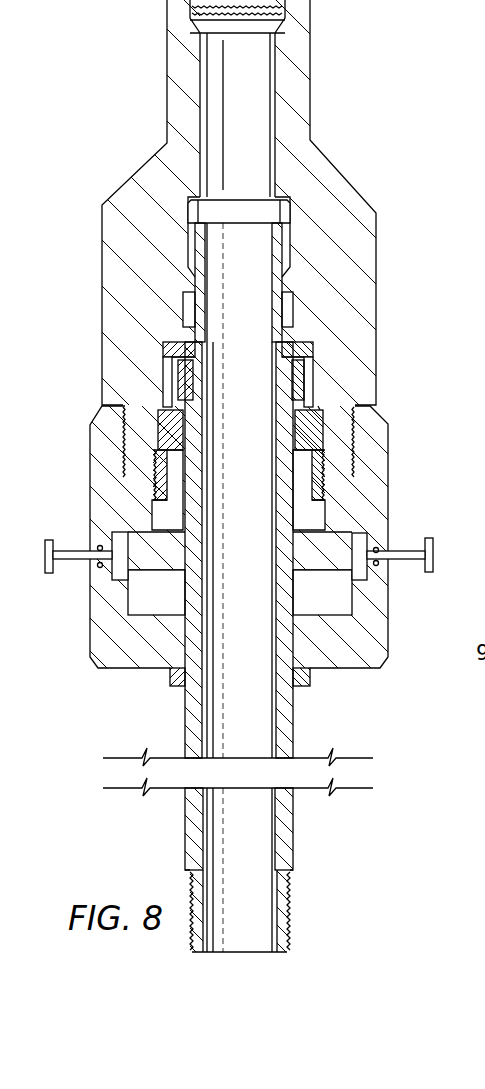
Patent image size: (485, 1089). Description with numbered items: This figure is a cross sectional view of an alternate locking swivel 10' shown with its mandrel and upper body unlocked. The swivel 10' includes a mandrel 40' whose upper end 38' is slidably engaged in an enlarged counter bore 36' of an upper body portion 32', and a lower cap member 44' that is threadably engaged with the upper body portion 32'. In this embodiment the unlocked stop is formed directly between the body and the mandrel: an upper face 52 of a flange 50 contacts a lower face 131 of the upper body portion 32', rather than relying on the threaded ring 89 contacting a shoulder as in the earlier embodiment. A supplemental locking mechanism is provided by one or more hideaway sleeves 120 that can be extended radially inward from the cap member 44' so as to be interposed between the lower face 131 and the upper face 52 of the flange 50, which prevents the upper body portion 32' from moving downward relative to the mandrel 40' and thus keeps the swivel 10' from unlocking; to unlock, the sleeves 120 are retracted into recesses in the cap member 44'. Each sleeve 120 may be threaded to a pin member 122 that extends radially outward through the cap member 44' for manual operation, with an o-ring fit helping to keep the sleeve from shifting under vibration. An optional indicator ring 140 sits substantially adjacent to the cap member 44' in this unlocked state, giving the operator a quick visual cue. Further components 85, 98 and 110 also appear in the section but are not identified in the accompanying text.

The locking swivel 10' is at (237, 476).
The upper body portion 32' is at (215, 202).
The enlarged counter bore 36' is at (125, 366).
The upper end of mandrel 38' is at (237, 135).
The mandrel 40' is at (238, 576).
The lower cap member 44' is at (215, 537).
The flange 50 is at (175, 562).
The upper face of flange 52 is at (337, 533).
The seal 85 is at (305, 382).
The threaded ring 89 is at (305, 350).
The threaded ring 98 is at (318, 406).
The threaded connection 110 is at (153, 487).
The hideaway sleeve 120 is at (362, 580).
The pin member 122 is at (404, 552).
The lower face of upper body portion 131 is at (112, 540).
The indicator ring 140 is at (168, 678).